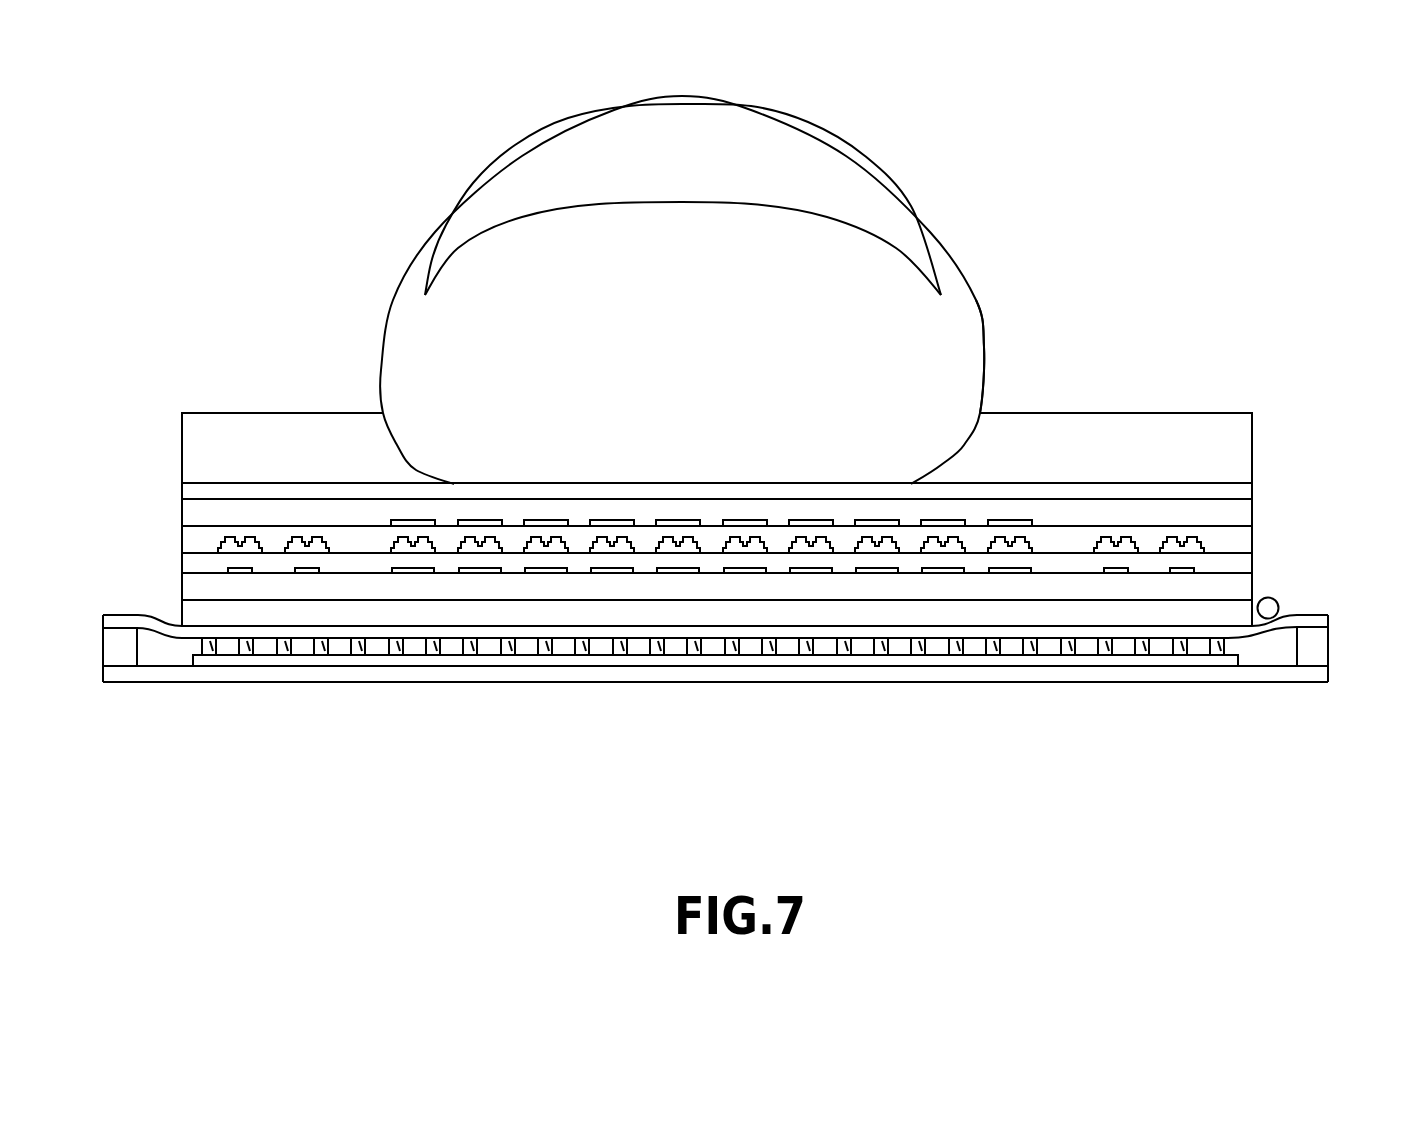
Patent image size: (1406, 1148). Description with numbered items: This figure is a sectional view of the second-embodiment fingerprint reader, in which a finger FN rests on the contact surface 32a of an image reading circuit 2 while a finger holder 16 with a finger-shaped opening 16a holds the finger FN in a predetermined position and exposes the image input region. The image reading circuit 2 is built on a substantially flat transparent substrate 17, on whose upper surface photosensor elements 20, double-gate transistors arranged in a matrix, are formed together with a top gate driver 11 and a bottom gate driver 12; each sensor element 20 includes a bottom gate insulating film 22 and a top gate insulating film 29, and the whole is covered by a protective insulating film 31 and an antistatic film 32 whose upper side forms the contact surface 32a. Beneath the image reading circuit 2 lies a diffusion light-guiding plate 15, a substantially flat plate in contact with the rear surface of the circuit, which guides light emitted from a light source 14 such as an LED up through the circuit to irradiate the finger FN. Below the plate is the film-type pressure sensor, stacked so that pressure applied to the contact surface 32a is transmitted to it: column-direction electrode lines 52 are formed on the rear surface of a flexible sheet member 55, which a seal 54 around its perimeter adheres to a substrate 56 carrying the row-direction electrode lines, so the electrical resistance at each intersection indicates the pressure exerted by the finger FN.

The finger FN is at (448, 186).
The image reading circuit 2 is at (122, 477).
The top gate driver 11 is at (218, 578).
The bottom gate driver 12 is at (1095, 578).
The light source 14 is at (1277, 597).
The diffusion light-guiding plate 15 is at (210, 610).
The finger holder 16 is at (1087, 427).
The opening 16a is at (968, 437).
The transparent substrate 17 is at (198, 594).
The photosensor elements 20 is at (478, 553).
The bottom gate insulating film 22 is at (198, 570).
The top gate insulating film 29 is at (686, 638).
The protective insulating film 31 is at (198, 520).
The antistatic film 32 is at (686, 413).
The contact surface 32a is at (292, 486).
The electrode lines 52 is at (251, 657).
The seal 54 is at (1310, 648).
The sheet member 55 is at (1317, 620).
The substrate 56 is at (1317, 675).